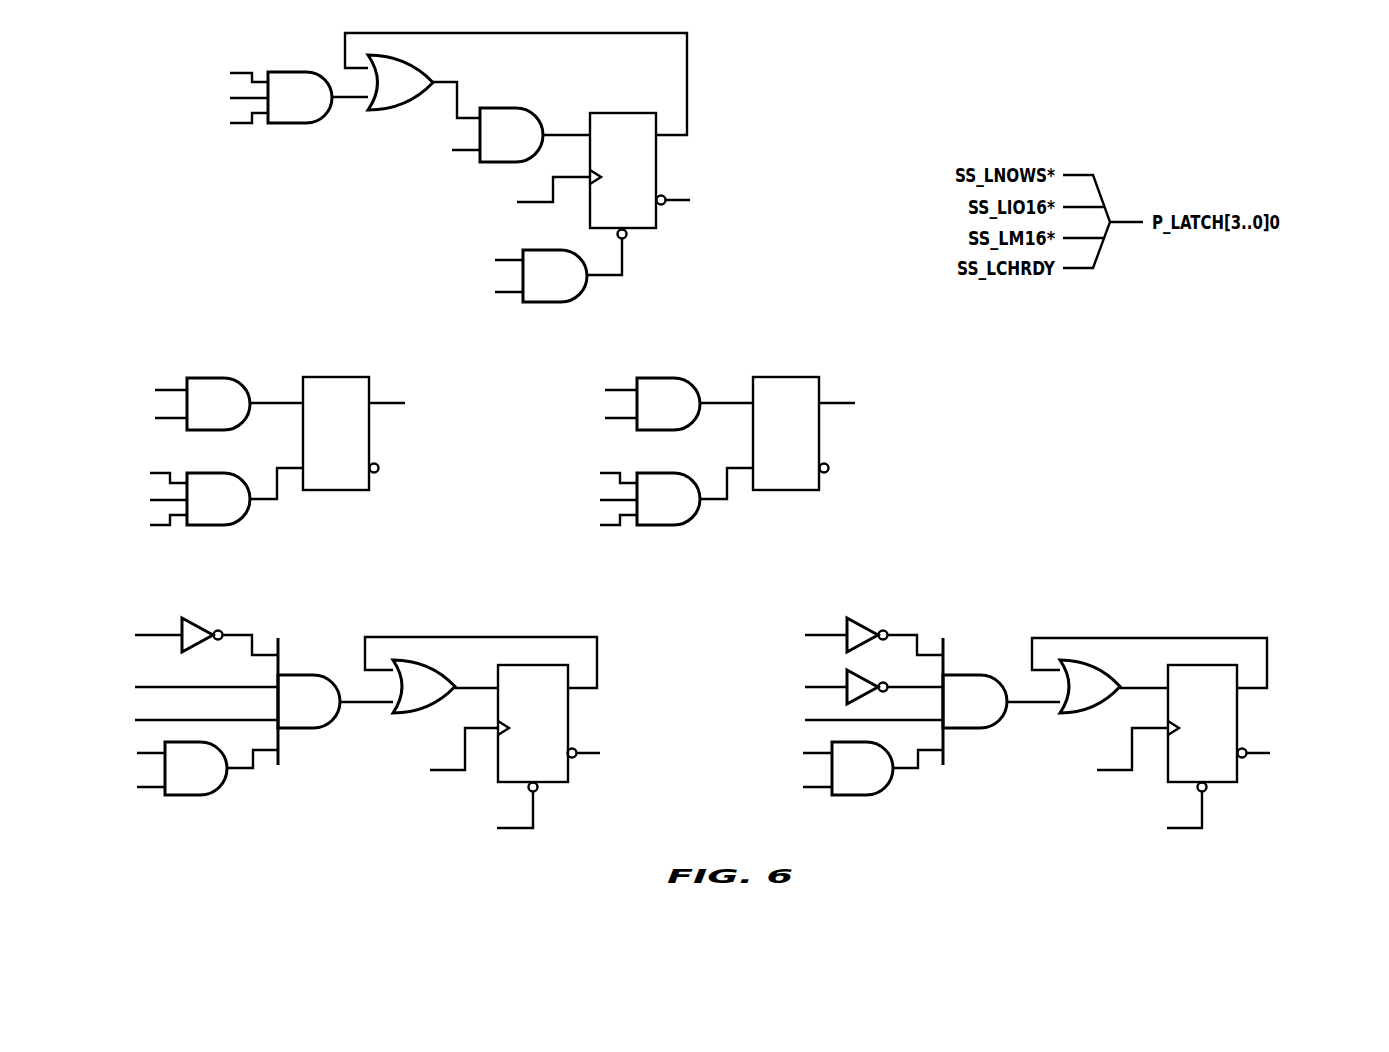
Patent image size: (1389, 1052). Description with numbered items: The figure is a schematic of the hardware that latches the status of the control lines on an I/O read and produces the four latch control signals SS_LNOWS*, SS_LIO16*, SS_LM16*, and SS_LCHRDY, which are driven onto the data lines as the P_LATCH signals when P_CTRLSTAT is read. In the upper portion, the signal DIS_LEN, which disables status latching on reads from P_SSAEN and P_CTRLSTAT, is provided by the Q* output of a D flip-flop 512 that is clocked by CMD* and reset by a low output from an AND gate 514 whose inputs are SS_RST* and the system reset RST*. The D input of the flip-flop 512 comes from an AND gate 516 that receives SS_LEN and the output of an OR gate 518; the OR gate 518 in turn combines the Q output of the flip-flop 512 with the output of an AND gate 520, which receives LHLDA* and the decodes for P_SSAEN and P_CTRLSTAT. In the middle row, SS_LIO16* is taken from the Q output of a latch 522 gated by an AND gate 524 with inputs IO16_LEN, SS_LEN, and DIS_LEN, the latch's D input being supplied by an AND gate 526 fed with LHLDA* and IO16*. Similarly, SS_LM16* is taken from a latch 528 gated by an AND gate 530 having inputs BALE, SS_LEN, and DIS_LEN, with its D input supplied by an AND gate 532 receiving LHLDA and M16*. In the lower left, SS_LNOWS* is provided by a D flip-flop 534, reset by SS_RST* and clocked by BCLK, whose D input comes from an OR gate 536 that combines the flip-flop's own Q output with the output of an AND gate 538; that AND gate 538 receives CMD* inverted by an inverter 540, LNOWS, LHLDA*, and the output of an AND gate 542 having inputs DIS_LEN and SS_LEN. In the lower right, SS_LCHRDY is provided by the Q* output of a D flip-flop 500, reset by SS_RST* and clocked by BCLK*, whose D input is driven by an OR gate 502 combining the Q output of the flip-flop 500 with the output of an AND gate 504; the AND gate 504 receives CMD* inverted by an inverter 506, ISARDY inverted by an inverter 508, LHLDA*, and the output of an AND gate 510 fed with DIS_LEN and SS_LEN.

The D flip-flop 500 is at (1206, 752).
The OR gate 502 is at (1144, 694).
The AND gate 504 is at (899, 709).
The inverter 506 is at (849, 628).
The inverter 508 is at (839, 675).
The AND gate 510 is at (843, 785).
The D flip-flop 512 is at (613, 194).
The AND gate 514 is at (502, 295).
The AND gate 516 is at (489, 124).
The OR gate 518 is at (516, 84).
The AND gate 520 is at (216, 113).
The latch 522 is at (398, 433).
The AND gate 524 is at (189, 509).
The AND gate 526 is at (195, 392).
The latch 528 is at (848, 433).
The AND gate 530 is at (644, 509).
The AND gate 532 is at (645, 392).
The D flip-flop 534 is at (542, 752).
The OR gate 536 is at (475, 693).
The AND gate 538 is at (230, 709).
The inverter 540 is at (181, 628).
The AND gate 542 is at (176, 785).